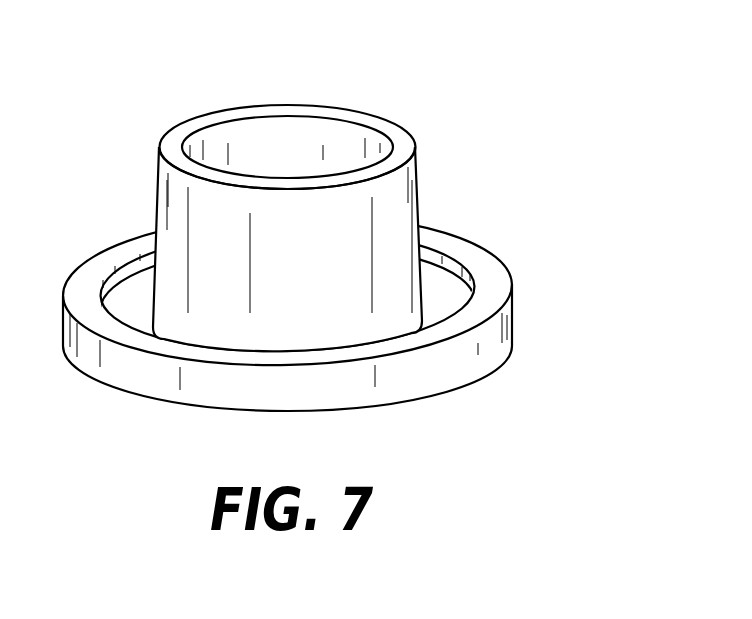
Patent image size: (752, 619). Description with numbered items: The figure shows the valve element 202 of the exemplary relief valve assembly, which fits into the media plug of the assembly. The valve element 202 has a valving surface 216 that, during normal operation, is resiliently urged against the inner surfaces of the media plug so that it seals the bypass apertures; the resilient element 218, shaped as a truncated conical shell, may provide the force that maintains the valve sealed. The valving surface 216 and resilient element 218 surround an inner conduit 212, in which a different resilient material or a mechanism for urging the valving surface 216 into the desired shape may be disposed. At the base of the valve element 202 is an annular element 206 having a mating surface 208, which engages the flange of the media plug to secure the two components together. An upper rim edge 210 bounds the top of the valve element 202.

The valve element 202 is at (338, 267).
The annular element 206 is at (500, 322).
The mating surface 208 is at (456, 264).
The cylinder top rim outer edge 210 is at (358, 115).
The inner conduit 212 is at (287, 145).
The valving surface 216 is at (387, 220).
The resilient element 218 is at (175, 150).